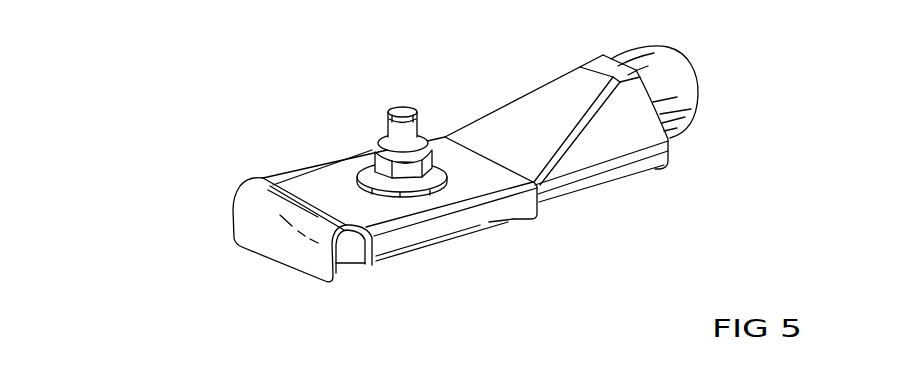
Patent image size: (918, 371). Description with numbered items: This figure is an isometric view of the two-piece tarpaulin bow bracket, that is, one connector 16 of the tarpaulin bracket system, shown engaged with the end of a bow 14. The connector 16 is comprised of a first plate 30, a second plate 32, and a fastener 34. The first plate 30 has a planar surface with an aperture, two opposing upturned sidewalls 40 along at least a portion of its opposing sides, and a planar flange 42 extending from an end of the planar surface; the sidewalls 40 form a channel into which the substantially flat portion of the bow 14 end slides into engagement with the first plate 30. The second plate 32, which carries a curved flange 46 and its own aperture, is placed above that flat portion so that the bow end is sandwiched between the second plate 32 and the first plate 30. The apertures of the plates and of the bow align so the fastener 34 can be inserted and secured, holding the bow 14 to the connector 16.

The bow 14 is at (710, 152).
The connector 16 is at (418, 187).
The first plate 30 is at (488, 263).
The second plate 32 is at (222, 163).
The fastener 34 is at (403, 124).
The upturned sidewall 40 is at (513, 221).
The planar flange 42 is at (351, 268).
The curved flange 46 is at (254, 264).